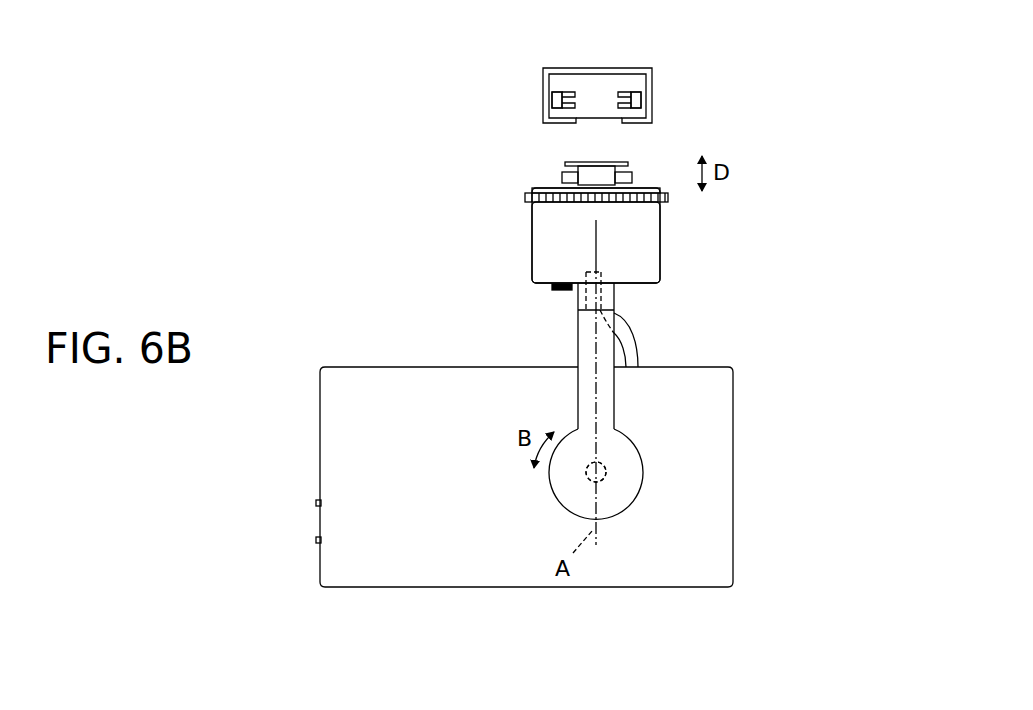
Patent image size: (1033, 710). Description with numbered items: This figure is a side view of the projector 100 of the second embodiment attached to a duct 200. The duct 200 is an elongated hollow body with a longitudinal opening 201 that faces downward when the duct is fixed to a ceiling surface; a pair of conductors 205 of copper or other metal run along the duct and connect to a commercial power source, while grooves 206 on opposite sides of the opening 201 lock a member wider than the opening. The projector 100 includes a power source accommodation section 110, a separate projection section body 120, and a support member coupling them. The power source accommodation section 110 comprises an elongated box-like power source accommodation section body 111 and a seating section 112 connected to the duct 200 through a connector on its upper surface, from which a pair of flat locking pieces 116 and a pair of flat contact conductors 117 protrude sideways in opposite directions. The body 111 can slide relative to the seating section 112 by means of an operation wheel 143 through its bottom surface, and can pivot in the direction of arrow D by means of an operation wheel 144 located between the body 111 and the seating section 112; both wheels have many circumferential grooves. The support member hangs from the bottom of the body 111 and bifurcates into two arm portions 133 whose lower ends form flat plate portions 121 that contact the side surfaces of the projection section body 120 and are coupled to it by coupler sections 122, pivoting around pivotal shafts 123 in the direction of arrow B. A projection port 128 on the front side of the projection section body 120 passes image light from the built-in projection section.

The projector 100 is at (762, 303).
The power source accommodation section 110 is at (440, 215).
The power source accommodation section body 111 is at (532, 250).
The seating section 112 is at (530, 191).
The locking pieces 116 is at (562, 178).
The contact conductors 117 is at (565, 164).
The projection section body 120 is at (733, 440).
The flat plate portions 121 is at (625, 493).
The coupler sections 122 is at (582, 481).
The pivotal shafts 123 is at (607, 472).
The projection port 128 is at (316, 541).
The arm portions 133 is at (614, 386).
The operation wheel 143 is at (566, 291).
The operation wheel 144 is at (668, 198).
The duct 200 is at (656, 81).
The opening 201 is at (586, 122).
The conductors 205 is at (626, 100).
The grooves 206 is at (556, 113).